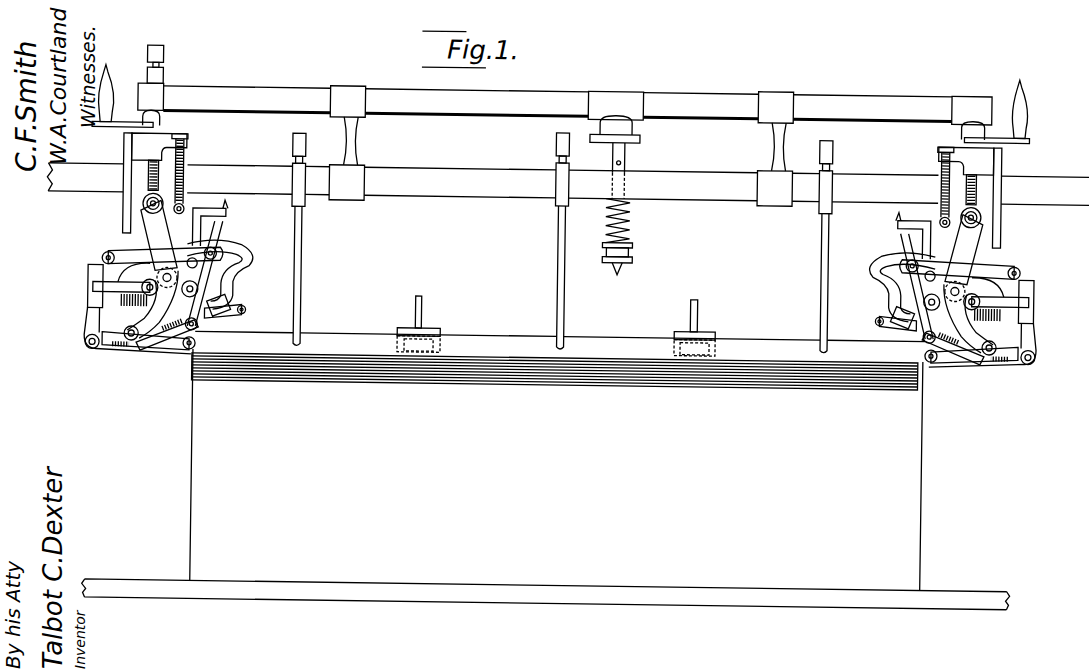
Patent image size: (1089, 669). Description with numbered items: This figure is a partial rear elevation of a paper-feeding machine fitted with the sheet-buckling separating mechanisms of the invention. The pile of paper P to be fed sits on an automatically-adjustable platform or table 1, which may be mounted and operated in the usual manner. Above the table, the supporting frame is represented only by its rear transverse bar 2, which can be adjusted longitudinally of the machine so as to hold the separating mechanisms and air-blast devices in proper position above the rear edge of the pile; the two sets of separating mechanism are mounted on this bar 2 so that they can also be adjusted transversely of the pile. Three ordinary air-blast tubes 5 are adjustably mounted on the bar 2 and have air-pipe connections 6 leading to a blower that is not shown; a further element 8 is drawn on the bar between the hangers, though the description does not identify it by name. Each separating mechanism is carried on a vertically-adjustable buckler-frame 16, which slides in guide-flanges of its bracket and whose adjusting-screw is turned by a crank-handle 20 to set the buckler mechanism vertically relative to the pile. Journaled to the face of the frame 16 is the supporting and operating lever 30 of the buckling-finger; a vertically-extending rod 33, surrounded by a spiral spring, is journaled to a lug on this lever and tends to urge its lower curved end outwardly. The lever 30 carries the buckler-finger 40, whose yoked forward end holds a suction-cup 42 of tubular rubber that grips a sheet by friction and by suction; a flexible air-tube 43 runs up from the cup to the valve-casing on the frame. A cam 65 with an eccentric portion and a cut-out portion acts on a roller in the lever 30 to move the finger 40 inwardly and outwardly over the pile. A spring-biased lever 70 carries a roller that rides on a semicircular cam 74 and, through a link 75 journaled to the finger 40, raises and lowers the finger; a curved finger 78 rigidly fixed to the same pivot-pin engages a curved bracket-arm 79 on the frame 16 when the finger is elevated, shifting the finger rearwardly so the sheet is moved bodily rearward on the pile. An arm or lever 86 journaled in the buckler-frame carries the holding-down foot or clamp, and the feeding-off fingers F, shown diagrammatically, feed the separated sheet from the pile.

The automatically-adjustable platform or table 1 is at (944, 586).
The rear transverse bar 2 is at (492, 181).
The air-blast tubes 5 is at (306, 276).
The air-pipe connections 6 is at (305, 150).
The spring-pressed screw plunger 8 is at (615, 183).
The buckler-frame 16 is at (129, 221).
The crank-handle 20 is at (1024, 101).
The supporting and operating lever 30 is at (155, 236).
The vertically-extending rod 33 is at (184, 145).
The buckler-finger 40 is at (162, 344).
The suction-cup 42 is at (871, 336).
The flexible air-tube 43 is at (246, 261).
The cam 65 is at (107, 321).
The lever 70 is at (140, 274).
The semicircular cam 74 is at (127, 293).
The link 75 is at (229, 283).
The curved finger 78 is at (225, 236).
The curved bracket-arm 79 is at (204, 218).
The arm or lever 86 is at (126, 350).
The feeding-off fingers F is at (433, 330).
The pile of paper P is at (679, 381).